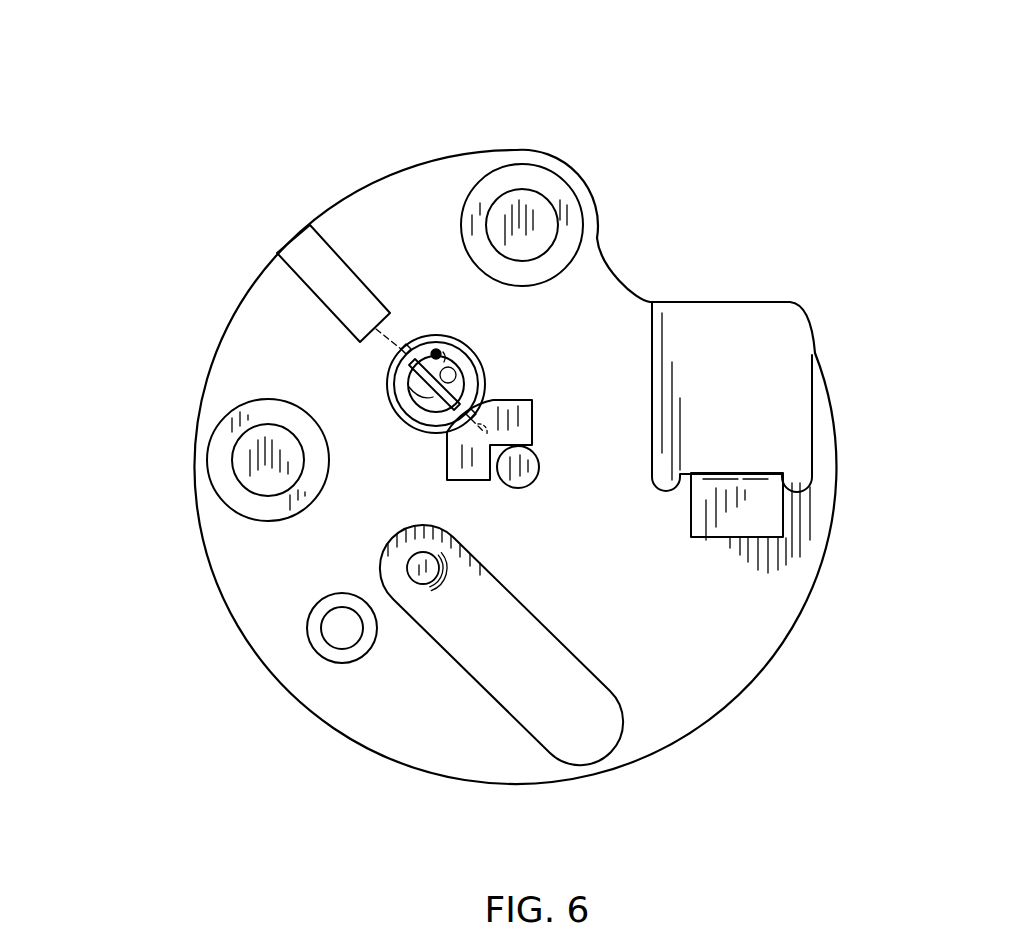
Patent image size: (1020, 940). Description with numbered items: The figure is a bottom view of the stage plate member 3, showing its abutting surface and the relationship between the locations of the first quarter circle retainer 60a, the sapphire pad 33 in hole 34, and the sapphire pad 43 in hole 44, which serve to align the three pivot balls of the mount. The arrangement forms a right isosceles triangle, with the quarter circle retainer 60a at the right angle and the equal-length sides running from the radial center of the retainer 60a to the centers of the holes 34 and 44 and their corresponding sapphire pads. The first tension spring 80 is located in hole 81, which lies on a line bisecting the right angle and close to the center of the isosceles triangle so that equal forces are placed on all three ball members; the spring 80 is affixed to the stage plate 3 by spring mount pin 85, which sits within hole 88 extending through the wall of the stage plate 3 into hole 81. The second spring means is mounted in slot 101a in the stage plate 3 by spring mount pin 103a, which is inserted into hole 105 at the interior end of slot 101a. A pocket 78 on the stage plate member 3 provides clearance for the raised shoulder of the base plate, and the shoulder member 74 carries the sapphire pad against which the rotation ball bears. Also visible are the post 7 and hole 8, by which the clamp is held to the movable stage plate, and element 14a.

The stage plate member 3 is at (217, 355).
The post 7 is at (897, 38).
The hole 8 is at (50, 465).
The connector slot 14a is at (728, 472).
The sapphire pad 33 is at (525, 200).
The hole 34 is at (495, 180).
The sapphire pad 43 is at (242, 458).
The hole 44 is at (230, 497).
The first quarter circle retainer 60a is at (517, 402).
The shoulder member 74 is at (765, 508).
The pocket 78 is at (712, 415).
The spring 80 is at (470, 350).
The hole 81 is at (383, 390).
The spring mount pin 85 is at (398, 336).
The hole 88 is at (332, 250).
The slot 101a is at (553, 742).
The spring mount pin 103a is at (428, 577).
The hole 105 is at (440, 562).